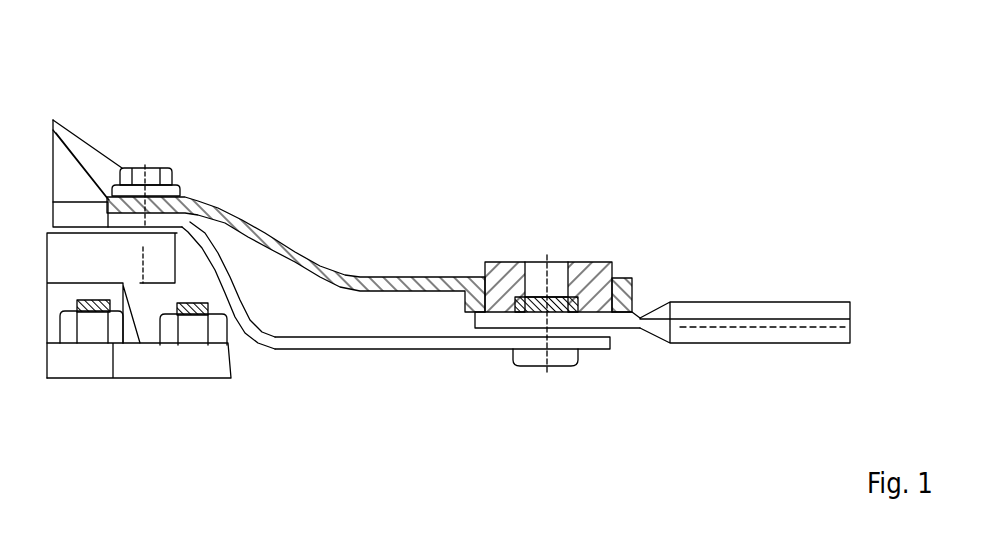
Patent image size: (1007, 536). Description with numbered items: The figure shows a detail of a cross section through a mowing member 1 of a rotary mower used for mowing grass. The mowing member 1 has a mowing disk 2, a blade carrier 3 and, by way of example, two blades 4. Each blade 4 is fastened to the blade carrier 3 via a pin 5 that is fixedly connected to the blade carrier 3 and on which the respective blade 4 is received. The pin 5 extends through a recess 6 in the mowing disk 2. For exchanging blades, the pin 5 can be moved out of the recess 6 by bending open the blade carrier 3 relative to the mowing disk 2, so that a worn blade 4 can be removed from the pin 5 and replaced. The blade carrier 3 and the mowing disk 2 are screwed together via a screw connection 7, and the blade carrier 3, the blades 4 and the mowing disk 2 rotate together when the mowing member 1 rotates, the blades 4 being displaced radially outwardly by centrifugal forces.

The mowing member 1 is at (320, 223).
The mowing disk 2 is at (273, 226).
The blade carrier 3 is at (311, 355).
The blade 4 is at (771, 294).
The pin 5 is at (559, 370).
The recess 6 is at (571, 251).
The screw connection 7 is at (154, 155).